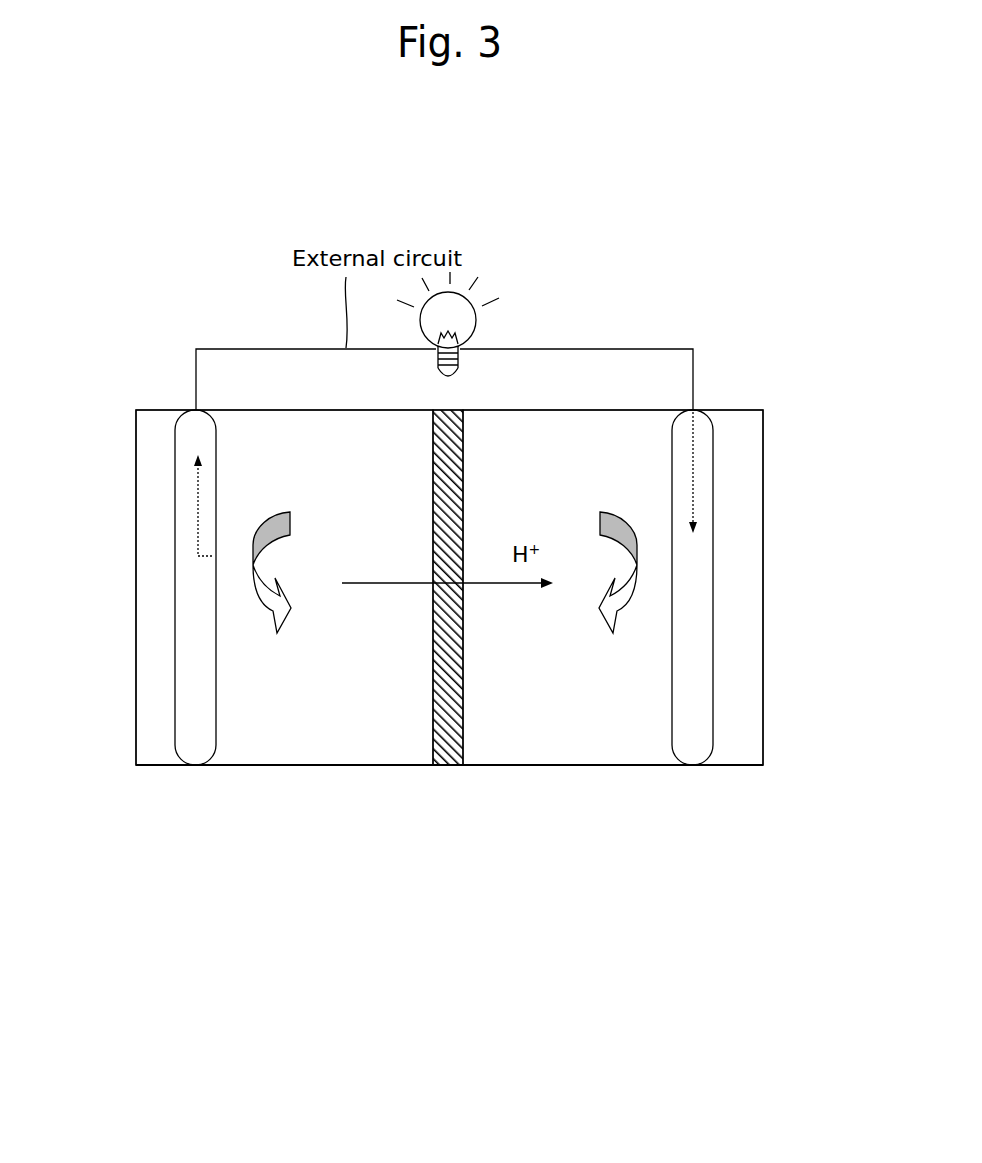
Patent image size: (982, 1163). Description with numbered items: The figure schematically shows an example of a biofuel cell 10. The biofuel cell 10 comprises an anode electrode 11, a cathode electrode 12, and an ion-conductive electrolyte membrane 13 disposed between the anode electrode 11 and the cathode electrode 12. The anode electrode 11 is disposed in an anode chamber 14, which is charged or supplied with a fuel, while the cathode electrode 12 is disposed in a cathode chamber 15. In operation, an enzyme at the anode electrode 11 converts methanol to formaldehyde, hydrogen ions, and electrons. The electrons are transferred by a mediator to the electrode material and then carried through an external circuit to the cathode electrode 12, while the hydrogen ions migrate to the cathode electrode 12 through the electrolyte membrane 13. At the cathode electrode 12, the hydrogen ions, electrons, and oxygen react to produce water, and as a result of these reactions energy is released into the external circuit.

The biofuel cell 10 is at (568, 842).
The anode electrode 11 is at (181, 396).
The cathode electrode 12 is at (709, 394).
The electrolyte membrane 13 is at (449, 767).
The anode chamber 14 is at (136, 490).
The cathode chamber 15 is at (763, 493).